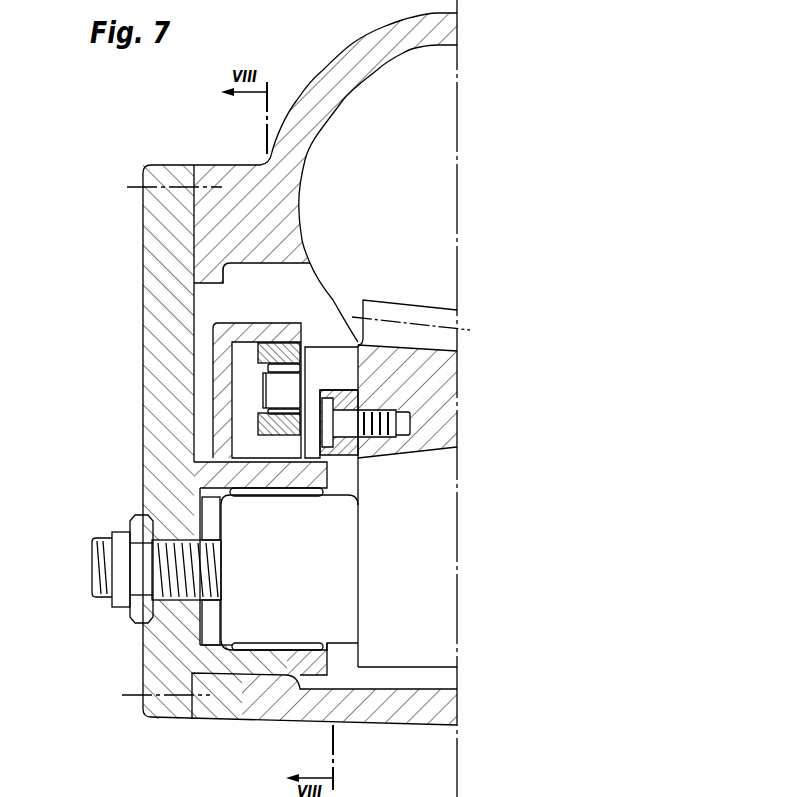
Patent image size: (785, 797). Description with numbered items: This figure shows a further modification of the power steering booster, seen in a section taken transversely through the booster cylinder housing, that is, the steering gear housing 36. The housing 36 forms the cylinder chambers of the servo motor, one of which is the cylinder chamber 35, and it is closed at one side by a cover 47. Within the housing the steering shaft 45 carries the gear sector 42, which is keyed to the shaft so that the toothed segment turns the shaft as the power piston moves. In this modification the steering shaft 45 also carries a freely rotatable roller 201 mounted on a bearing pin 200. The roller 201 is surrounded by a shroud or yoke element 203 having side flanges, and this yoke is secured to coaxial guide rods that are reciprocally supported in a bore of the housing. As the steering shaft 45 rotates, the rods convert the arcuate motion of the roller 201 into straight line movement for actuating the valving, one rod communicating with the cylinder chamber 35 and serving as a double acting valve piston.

The cylinder chamber 35 is at (443, 282).
The steering gear housing 36 is at (437, 715).
The gear sector 42 is at (443, 342).
The steering shaft 45 is at (437, 637).
The cover 47 is at (155, 310).
The bearing pin 200 is at (275, 397).
The roller 201 is at (256, 433).
The yoke element 203 is at (217, 345).